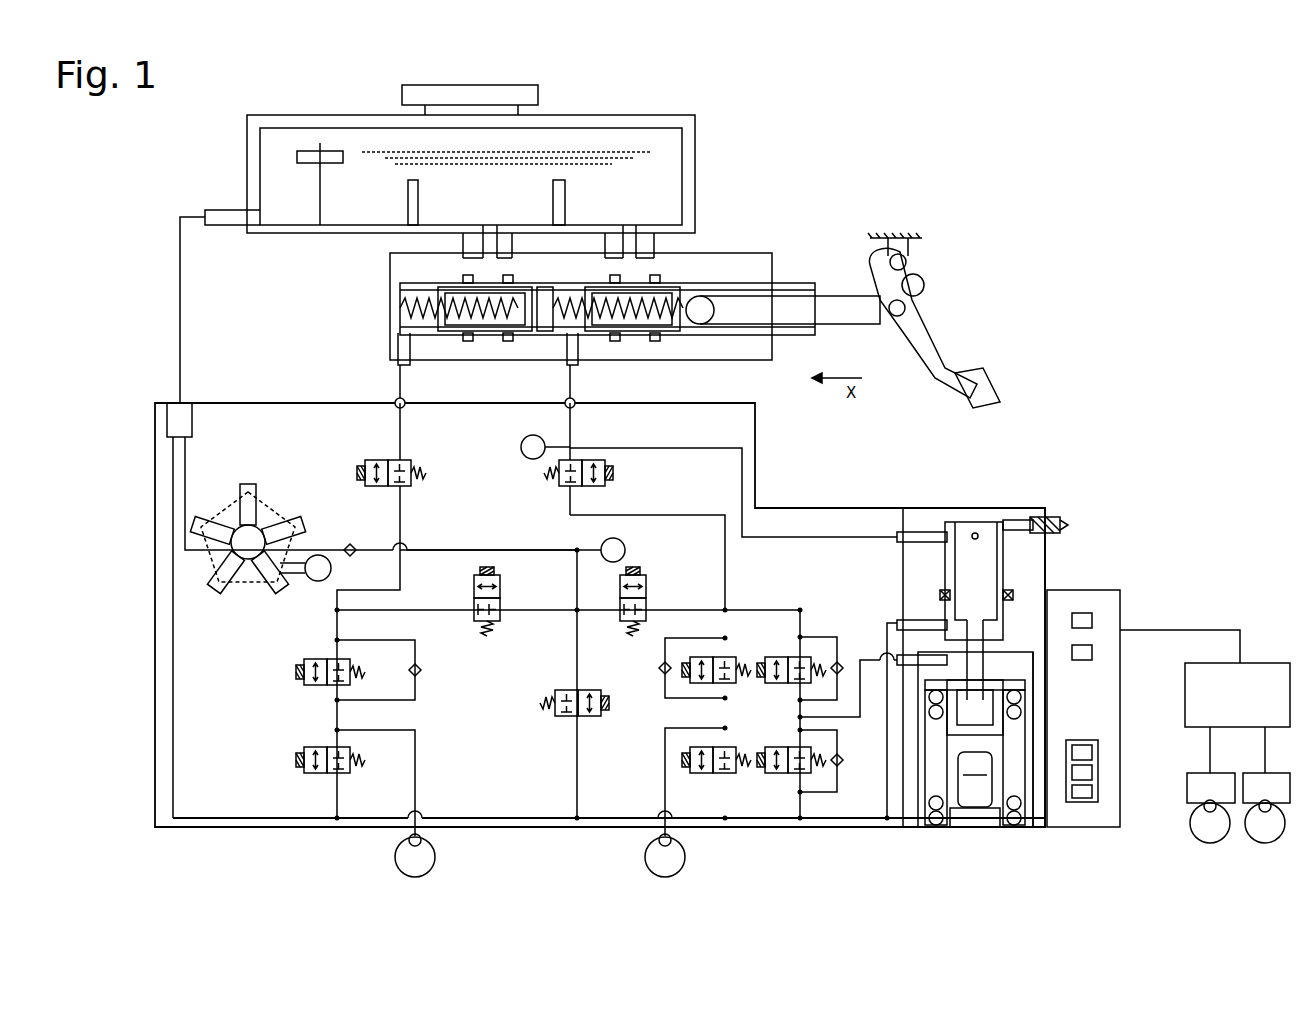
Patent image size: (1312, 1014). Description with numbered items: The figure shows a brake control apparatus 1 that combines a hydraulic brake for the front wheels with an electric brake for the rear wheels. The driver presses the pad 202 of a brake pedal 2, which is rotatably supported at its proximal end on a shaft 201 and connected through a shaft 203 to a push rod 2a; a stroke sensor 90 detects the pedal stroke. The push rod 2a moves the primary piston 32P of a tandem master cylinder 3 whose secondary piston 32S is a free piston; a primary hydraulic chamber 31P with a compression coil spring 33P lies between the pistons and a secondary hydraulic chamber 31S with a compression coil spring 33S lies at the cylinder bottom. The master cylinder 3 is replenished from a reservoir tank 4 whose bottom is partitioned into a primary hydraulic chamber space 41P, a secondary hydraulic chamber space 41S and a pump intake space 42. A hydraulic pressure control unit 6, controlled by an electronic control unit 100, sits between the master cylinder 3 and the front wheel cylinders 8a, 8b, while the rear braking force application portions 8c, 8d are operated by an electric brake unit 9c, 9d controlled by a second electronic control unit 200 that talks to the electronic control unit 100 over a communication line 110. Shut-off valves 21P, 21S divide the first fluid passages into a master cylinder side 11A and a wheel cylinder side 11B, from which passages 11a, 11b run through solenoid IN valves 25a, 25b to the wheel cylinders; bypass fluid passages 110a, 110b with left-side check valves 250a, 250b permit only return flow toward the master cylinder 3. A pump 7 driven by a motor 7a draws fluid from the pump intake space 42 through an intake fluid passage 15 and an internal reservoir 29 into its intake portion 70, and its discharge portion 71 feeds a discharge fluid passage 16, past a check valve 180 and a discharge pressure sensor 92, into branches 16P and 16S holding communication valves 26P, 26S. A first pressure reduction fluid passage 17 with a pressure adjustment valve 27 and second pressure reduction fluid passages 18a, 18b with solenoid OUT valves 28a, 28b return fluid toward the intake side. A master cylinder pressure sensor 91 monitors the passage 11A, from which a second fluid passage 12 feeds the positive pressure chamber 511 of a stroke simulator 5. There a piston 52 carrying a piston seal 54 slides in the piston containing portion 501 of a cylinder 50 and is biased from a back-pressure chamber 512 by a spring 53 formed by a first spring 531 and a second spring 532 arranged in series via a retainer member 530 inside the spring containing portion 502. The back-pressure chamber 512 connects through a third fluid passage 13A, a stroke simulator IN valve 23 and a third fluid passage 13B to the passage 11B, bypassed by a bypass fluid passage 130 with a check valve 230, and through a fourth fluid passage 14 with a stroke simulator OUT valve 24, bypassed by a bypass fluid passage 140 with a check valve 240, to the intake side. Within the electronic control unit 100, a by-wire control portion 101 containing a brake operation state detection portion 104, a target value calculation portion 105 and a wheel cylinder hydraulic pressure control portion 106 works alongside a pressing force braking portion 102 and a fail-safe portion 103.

The brake control apparatus 1 is at (205, 152).
The brake pedal 2 is at (942, 345).
The push rod 2a is at (832, 294).
The master cylinder 3 is at (735, 254).
The reservoir tank 4 is at (342, 116).
The stroke simulator 5 is at (970, 838).
The hydraulic pressure control unit 6 is at (820, 506).
The pump 7 is at (270, 502).
The motor 7a is at (333, 569).
The wheel cylinder 8a is at (684, 846).
The wheel cylinder 8b is at (396, 846).
The braking force application portion 8c is at (1281, 841).
The braking force application portion 8d is at (1196, 841).
The electric brake unit 9c is at (1282, 772).
The electric brake unit 9d is at (1190, 772).
The first fluid passage 11A is at (396, 401).
The first fluid passage 11B is at (403, 527).
The first fluid passage 11a is at (720, 723).
The first fluid passage 11b is at (342, 722).
The second fluid passage 12 is at (693, 449).
The third fluid passage 13A is at (862, 655).
The third fluid passage 13B is at (790, 608).
The fourth fluid passage 14 is at (795, 813).
The intake fluid passage 15 is at (189, 215).
The discharge fluid passage 16 is at (380, 548).
The discharge fluid passage 16S is at (536, 607).
The discharge fluid passage 16P is at (585, 607).
The first pressure reduction fluid passage 17 is at (574, 736).
The second pressure reduction fluid passage 18a is at (721, 813).
The second pressure reduction fluid passage 18b is at (341, 813).
The shut-off valve 21S is at (357, 473).
The shut-off valve 21P is at (614, 473).
The stroke simulator IN valve 23 is at (776, 685).
The stroke simulator OUT valve 24 is at (776, 779).
The solenoid IN valve 25a is at (734, 662).
The solenoid IN valve 25b is at (311, 658).
The communication valve 26S is at (477, 585).
The communication valve 26P is at (640, 585).
The pressure adjustment valve 27 is at (571, 691).
The solenoid OUT valve 28a is at (731, 746).
The solenoid OUT valve 28b is at (313, 746).
The internal reservoir 29 is at (193, 420).
The secondary hydraulic chamber 31S is at (405, 290).
The primary hydraulic chamber 31P is at (573, 334).
The secondary piston 32S is at (522, 334).
The primary piston 32P is at (740, 334).
The compression coil spring 33S is at (462, 340).
The compression coil spring 33P is at (641, 336).
The secondary hydraulic chamber space 41S is at (515, 200).
The primary hydraulic chamber space 41P is at (652, 206).
The pump intake space 42 is at (285, 208).
The cylinder 50 is at (1035, 507).
The piston 52 is at (975, 518).
The spring 53 is at (949, 850).
The piston seal 54 is at (1013, 590).
The intake portion 70 is at (222, 523).
The discharge portion 71 is at (284, 520).
The stroke sensor 90 is at (926, 285).
The master cylinder pressure sensor 91 is at (520, 447).
The discharge pressure sensor 92 is at (626, 550).
The ECU 100 is at (1083, 589).
The by-wire control portion 101 is at (1092, 805).
The pressing force braking portion 102 is at (1095, 620).
The fail-safe portion 103 is at (1095, 652).
The brake operation state detection portion 104 is at (1095, 752).
The target value calculation portion 105 is at (1095, 772).
The wheel cylinder hydraulic pressure control portion 106 is at (1095, 790).
The communication line 110 is at (1210, 629).
The bypass fluid passage 130 is at (813, 634).
The bypass fluid passage 140 is at (865, 800).
The check valve 180 is at (350, 544).
The ECU 200 is at (1255, 662).
The shaft 201 is at (908, 261).
The pad 202 is at (988, 370).
The shaft 203 is at (907, 308).
The check valve 230 is at (840, 658).
The check valve 240 is at (844, 769).
The left-side check valve 250a is at (661, 676).
The left-side check valve 250b is at (420, 668).
The piston containing portion 501 is at (1000, 568).
The spring containing portion 502 is at (1026, 770).
The positive pressure chamber 511 is at (946, 520).
The back-pressure chamber 512 is at (1022, 669).
The retainer member 530 is at (990, 770).
The first spring 531 is at (940, 722).
The second spring 532 is at (935, 705).
The bypass fluid passage 110a is at (700, 636).
The bypass fluid passage 110b is at (417, 641).